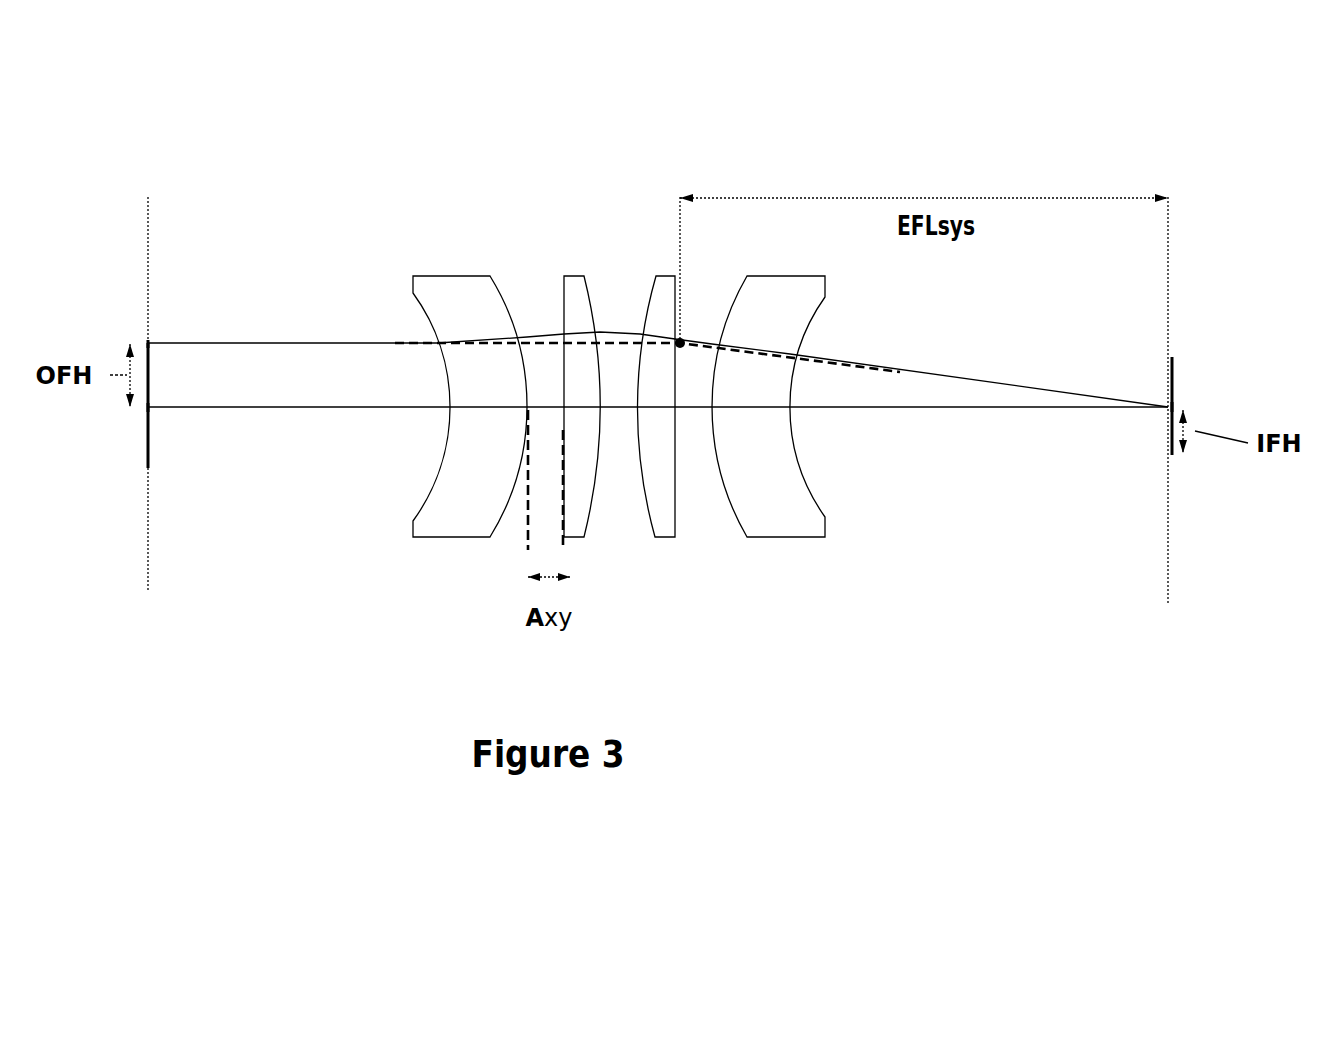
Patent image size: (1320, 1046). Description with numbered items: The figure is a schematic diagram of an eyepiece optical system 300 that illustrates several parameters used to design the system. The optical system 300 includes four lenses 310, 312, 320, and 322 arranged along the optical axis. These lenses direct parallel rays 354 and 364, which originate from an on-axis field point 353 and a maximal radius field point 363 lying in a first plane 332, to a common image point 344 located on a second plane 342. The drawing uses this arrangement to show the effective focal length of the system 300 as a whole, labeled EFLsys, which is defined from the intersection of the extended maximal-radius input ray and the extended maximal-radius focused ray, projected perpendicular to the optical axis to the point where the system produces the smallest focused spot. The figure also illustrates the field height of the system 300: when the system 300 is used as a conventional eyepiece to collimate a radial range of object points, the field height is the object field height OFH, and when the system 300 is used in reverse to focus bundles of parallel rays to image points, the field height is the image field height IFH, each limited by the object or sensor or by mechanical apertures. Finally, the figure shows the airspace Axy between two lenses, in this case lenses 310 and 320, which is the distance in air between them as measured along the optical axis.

The eyepiece optical system 300 is at (585, 240).
The lens 310 is at (580, 520).
The lens 312 is at (670, 510).
The lens 320 is at (453, 525).
The lens 322 is at (782, 527).
The first plane 332 is at (148, 595).
The second plane 342 is at (1172, 605).
The common image point 344 is at (1165, 410).
The on-axis field point 353 is at (147, 407).
The parallel ray 354 is at (357, 407).
The maximal radius field point 363 is at (147, 335).
The parallel ray 364 is at (267, 407).